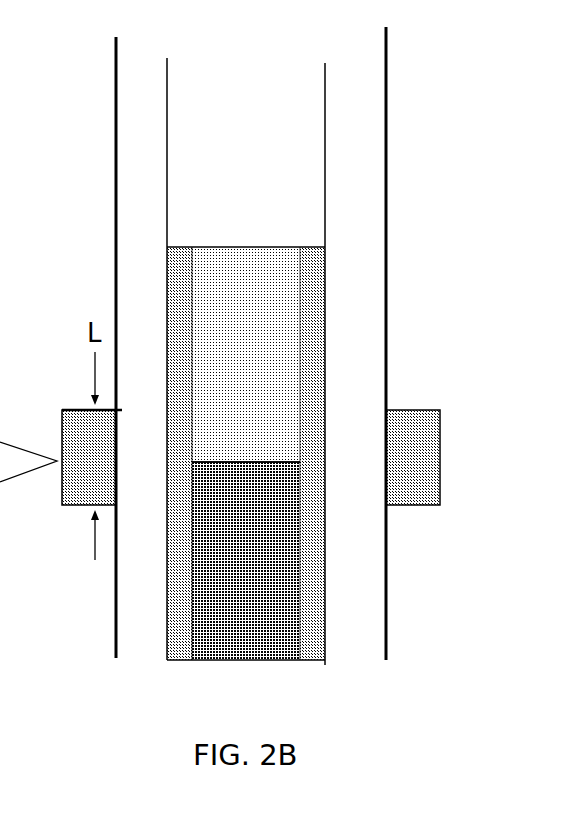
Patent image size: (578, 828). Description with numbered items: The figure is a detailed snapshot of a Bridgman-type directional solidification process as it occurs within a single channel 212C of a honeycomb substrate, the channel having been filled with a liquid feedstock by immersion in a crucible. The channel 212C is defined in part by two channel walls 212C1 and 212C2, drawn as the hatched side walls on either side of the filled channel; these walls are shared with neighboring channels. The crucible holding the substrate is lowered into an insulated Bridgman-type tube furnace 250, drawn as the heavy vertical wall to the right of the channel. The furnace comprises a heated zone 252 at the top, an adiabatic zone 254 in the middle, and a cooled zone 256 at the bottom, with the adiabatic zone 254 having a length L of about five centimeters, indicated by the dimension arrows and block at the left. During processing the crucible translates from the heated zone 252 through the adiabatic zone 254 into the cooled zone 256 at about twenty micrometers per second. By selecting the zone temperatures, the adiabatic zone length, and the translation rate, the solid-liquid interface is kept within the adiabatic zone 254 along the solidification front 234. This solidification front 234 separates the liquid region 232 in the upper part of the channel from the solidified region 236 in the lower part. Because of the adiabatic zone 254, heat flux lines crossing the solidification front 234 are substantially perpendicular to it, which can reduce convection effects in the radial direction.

The Bridgman-type tube furnace 250 is at (392, 129).
The heated zone 252 is at (358, 308).
The adiabatic zone 254 is at (357, 457).
The cooled zone 256 is at (358, 572).
The channel 212C is at (243, 238).
The channel wall 212C1 is at (178, 645).
The channel wall 212C2 is at (313, 645).
The liquid region 232 is at (278, 285).
The solidification front 234 is at (257, 451).
The solidified region 236 is at (278, 652).